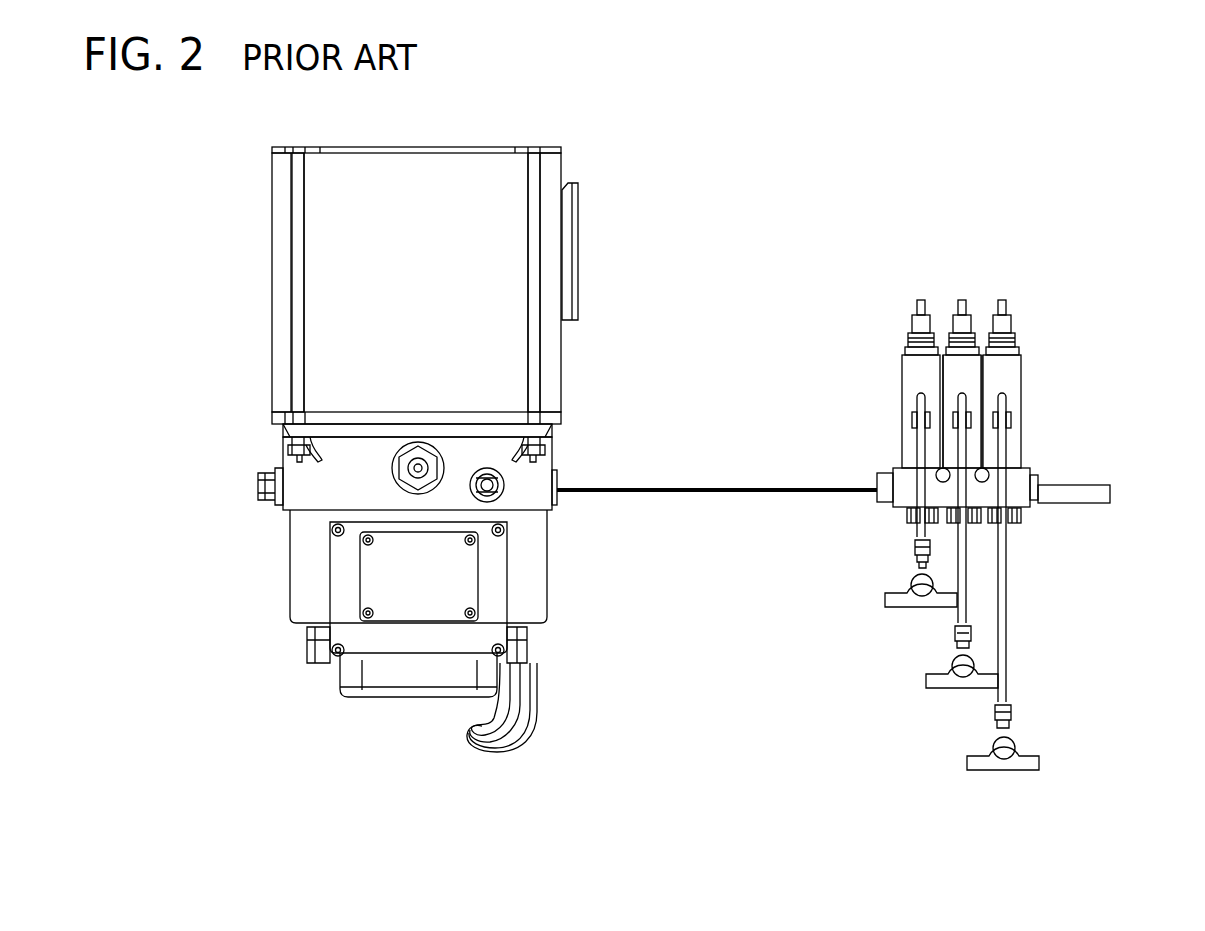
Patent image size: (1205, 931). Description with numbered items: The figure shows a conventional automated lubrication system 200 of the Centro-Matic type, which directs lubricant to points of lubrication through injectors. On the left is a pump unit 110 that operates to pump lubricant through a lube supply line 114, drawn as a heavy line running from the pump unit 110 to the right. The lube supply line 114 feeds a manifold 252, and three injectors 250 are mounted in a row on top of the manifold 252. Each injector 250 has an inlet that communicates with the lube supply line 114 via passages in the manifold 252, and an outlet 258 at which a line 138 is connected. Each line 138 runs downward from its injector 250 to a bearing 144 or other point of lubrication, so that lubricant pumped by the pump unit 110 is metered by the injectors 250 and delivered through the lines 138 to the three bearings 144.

The pump unit 110 is at (570, 154).
The lube supply line 114 is at (698, 487).
The conventional automated lubrication system 200 is at (928, 165).
The injector 250 is at (917, 372).
The injector outlet fitting 258 is at (1008, 400).
The line 138 is at (922, 443).
The manifold 252 is at (1020, 500).
The bearing 144 is at (923, 607).